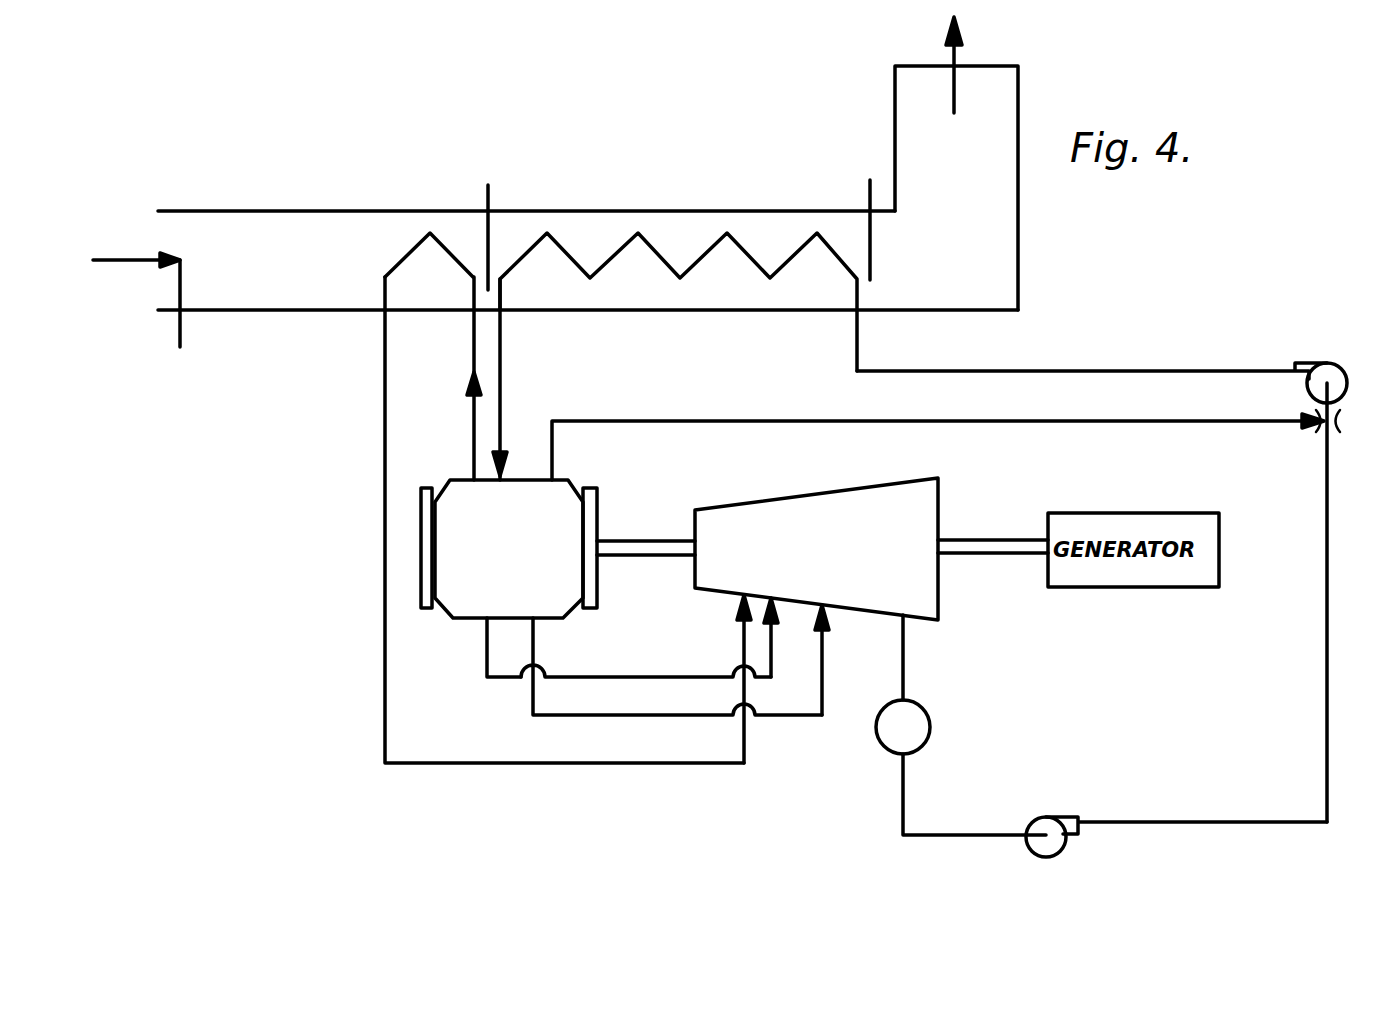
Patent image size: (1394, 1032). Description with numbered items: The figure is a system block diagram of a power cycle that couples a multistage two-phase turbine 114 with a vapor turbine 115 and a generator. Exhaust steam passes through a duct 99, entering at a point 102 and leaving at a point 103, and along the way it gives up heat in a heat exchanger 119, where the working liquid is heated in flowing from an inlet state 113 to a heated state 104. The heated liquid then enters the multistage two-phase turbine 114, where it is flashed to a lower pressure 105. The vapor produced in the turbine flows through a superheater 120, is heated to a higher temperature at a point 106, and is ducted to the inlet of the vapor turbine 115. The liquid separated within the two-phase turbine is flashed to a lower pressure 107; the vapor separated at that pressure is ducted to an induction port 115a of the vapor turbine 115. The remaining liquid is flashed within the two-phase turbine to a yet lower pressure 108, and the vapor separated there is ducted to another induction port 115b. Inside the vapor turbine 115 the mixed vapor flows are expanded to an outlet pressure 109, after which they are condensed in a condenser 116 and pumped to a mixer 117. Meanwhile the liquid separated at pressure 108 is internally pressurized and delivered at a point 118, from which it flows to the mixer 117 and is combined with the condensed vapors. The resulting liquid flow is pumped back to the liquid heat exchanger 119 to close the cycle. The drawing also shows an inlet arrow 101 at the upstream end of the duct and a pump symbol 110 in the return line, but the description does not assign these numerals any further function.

The duct 99 is at (570, 211).
The flue gas inlet 101 is at (180, 322).
The exhaust steam inlet state 102 is at (488, 190).
The exhaust steam outlet state 103 is at (868, 180).
The heated liquid state 104 is at (500, 337).
The first flash pressure 105 is at (472, 332).
The superheated vapor state 106 is at (385, 392).
The second flash pressure 107 is at (485, 643).
The third flash pressure 108 is at (533, 647).
The outlet pressure 109 is at (903, 672).
The pump 110 is at (1217, 822).
The liquid inlet state 113 is at (1082, 370).
The multistage two-phase turbine 114 is at (558, 549).
The vapor turbine 115 is at (871, 549).
The induction port 115a is at (768, 596).
The induction port 115b is at (822, 607).
The condenser 116 is at (885, 745).
The mixer 117 is at (1337, 425).
The pressurized liquid delivery 118 is at (725, 420).
The heat exchanger 119 is at (668, 232).
The superheater 120 is at (410, 232).